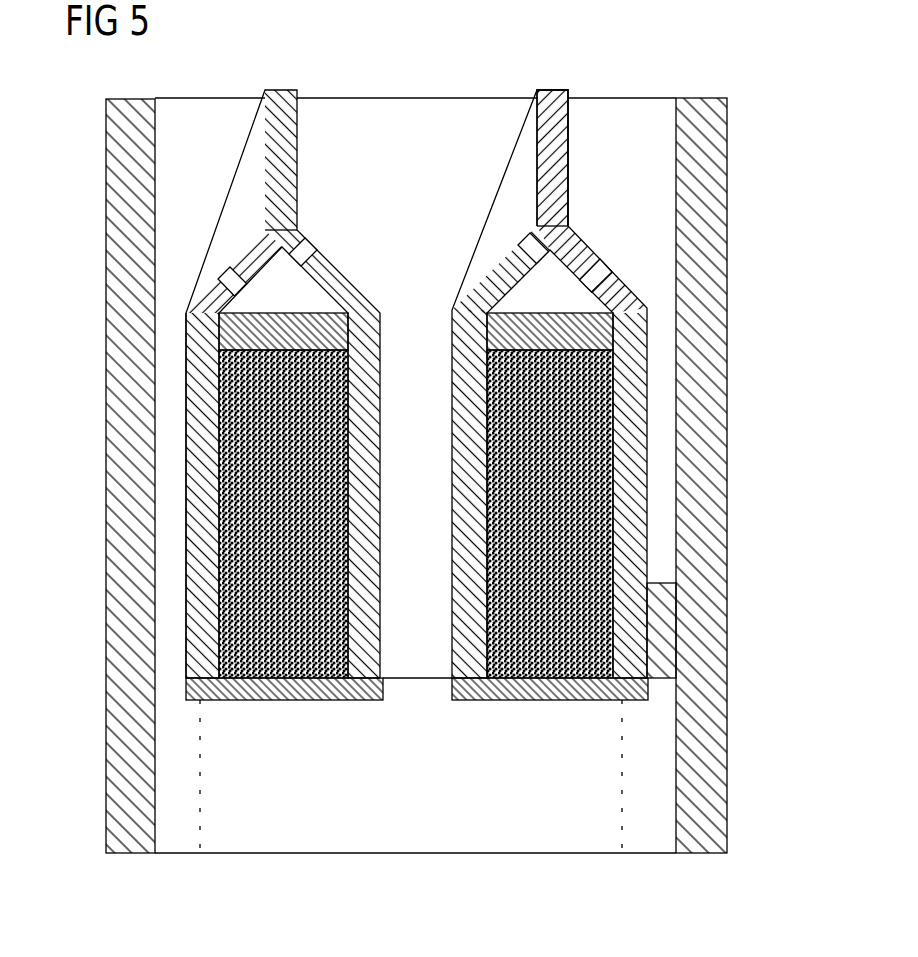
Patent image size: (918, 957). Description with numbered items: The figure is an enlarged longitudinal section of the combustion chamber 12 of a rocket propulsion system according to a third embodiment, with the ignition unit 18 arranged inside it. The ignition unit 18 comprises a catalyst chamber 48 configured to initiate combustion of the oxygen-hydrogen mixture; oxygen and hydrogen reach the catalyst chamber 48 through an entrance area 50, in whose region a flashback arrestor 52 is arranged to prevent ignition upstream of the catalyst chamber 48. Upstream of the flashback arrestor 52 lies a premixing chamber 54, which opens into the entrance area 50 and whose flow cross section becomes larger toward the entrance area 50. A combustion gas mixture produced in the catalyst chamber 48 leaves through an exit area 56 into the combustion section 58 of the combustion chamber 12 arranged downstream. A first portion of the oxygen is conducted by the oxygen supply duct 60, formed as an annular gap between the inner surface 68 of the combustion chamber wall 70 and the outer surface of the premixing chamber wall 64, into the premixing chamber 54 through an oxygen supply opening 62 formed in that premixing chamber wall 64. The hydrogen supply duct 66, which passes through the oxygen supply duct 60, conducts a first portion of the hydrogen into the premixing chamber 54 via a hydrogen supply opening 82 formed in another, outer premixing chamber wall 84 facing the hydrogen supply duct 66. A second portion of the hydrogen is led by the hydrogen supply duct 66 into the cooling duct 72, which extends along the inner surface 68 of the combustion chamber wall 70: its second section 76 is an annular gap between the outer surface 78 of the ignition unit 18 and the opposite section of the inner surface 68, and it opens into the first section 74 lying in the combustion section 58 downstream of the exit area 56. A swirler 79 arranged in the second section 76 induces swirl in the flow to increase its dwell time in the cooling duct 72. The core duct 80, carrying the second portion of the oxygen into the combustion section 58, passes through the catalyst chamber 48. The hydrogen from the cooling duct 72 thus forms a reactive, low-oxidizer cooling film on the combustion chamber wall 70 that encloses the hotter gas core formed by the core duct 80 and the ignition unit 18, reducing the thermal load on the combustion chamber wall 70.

The combustion chamber 12 is at (735, 285).
The ignition unit 18 is at (576, 116).
The catalyst chamber 48 is at (612, 358).
The entrance area 50 is at (210, 384).
The flashback arrestor 52 is at (215, 338).
The premixing chamber 54 is at (273, 288).
The exit area 56 is at (417, 730).
The combustion section 58 is at (480, 840).
The oxygen supply duct 60 is at (405, 112).
The oxygen supply opening 62 is at (319, 229).
The premixing chamber wall 64 is at (550, 95).
The hydrogen supply duct 66 is at (650, 108).
The inner surface 68 is at (158, 130).
The combustion chamber wall 70 is at (118, 148).
The cooling duct 72 is at (165, 735).
The first section 74 is at (172, 828).
The second section 76 is at (170, 480).
The outer surface 78 is at (185, 402).
The swirler 79 is at (660, 630).
The core duct 80 is at (420, 663).
The hydrogen supply opening 82 is at (616, 262).
The outer premixing chamber wall 84 is at (647, 308).